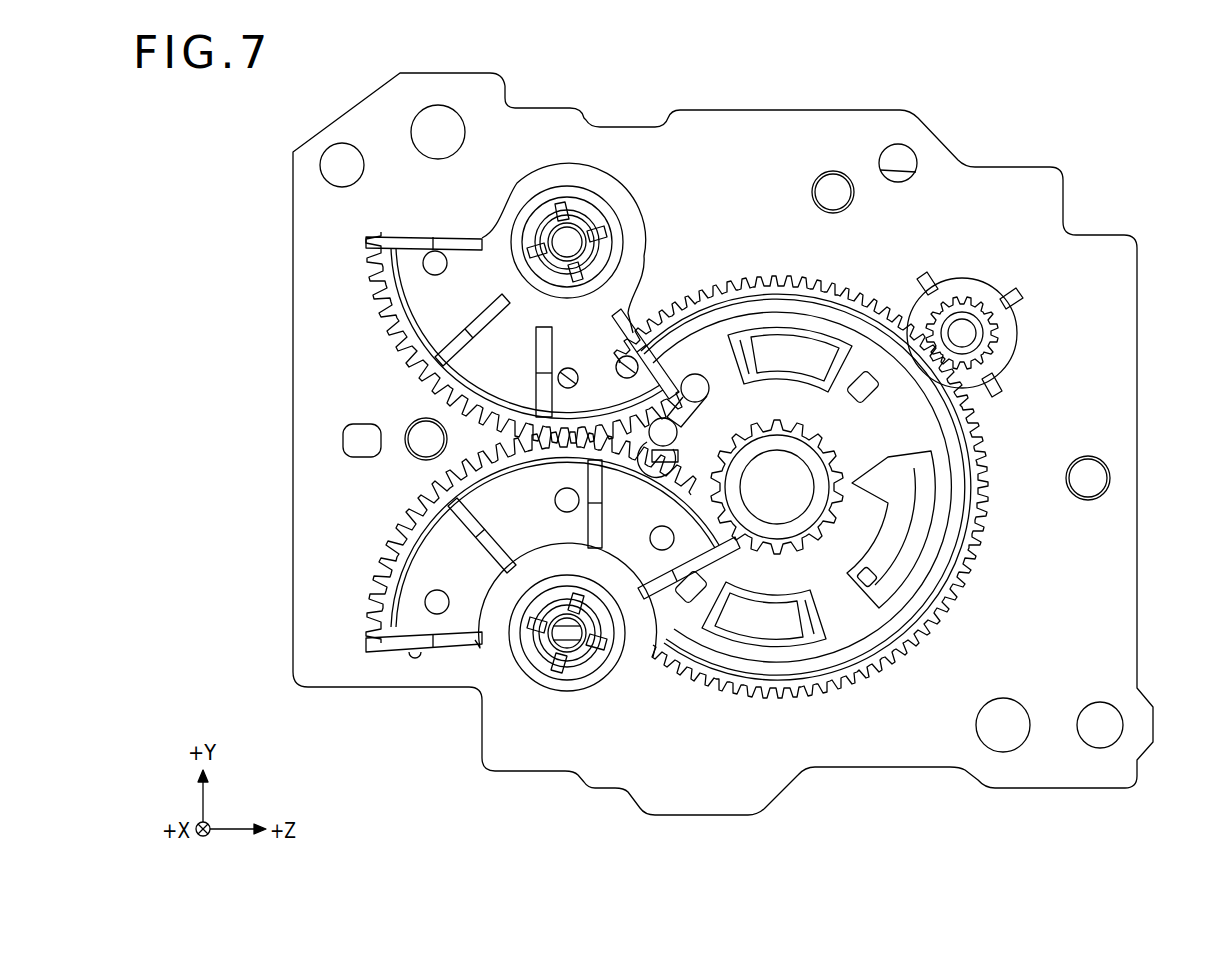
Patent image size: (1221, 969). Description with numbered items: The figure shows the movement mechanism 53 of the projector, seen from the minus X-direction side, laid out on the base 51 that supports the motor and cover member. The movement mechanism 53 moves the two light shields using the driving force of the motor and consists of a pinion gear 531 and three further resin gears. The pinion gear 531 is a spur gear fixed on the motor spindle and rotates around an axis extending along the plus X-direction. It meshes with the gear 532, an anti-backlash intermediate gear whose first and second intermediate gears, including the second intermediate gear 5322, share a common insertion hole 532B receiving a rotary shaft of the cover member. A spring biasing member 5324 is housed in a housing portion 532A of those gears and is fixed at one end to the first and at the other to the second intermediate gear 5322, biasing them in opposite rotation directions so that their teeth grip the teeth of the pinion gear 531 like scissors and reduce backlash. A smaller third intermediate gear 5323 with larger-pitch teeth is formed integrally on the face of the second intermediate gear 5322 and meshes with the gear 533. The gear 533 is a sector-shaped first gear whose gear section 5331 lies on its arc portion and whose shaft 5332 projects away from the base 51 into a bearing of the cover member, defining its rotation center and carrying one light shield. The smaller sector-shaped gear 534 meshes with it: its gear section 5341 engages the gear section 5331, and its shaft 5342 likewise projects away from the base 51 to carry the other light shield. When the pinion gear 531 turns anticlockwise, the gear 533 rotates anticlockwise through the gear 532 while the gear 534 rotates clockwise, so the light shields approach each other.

The base 51 is at (1132, 266).
The movement mechanism 53 is at (752, 232).
The pinion gear 531 is at (972, 350).
The gear 532 is at (848, 632).
The housing portion 532A is at (695, 374).
The insertion hole 532B is at (805, 490).
The second intermediate gear 5322 is at (885, 613).
The third intermediate gear 5323 is at (800, 522).
The biasing member 5324 is at (675, 458).
The gear 533 is at (432, 568).
The gear section 5331 is at (368, 603).
The shaft 5332 is at (583, 653).
The gear 534 is at (424, 306).
The gear section 5341 is at (413, 363).
The shaft 5342 is at (590, 212).